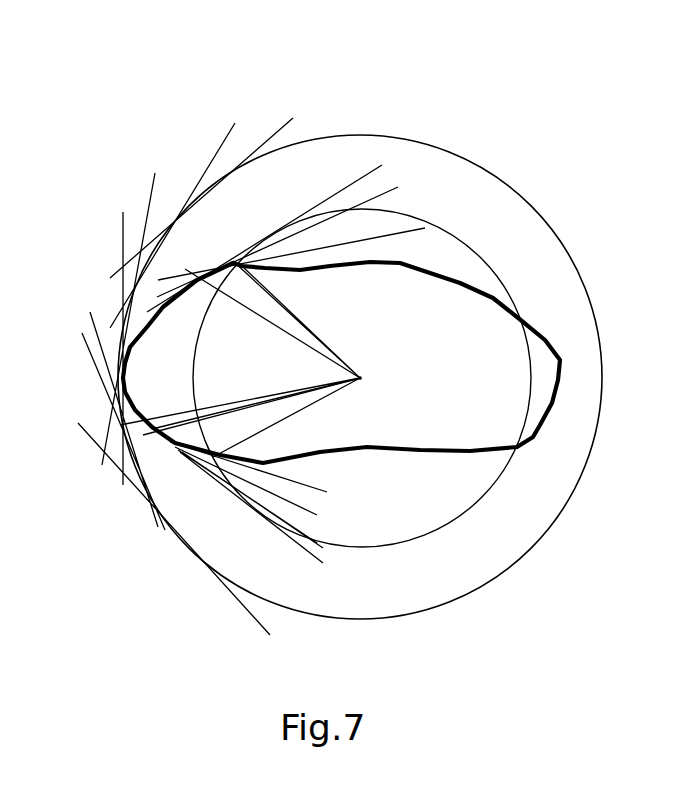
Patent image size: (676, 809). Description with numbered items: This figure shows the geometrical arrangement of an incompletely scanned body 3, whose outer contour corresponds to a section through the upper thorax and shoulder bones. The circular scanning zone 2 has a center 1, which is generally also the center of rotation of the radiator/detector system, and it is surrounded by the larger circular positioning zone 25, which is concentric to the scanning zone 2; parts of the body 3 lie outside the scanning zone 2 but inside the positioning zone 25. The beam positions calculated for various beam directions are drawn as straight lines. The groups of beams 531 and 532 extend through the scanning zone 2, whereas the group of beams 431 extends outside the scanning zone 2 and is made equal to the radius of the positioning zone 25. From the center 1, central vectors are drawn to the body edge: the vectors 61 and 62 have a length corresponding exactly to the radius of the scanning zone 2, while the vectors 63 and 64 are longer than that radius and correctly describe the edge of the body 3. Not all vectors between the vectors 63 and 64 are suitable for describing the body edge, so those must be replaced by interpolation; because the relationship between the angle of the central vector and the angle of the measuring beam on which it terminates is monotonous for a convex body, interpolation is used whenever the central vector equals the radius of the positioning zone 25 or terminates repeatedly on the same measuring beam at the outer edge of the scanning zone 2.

The center 1 is at (361, 379).
The scanning zone 2 is at (527, 396).
The body 3 is at (553, 402).
The positioning zone 25 is at (600, 400).
The vector 61 is at (300, 318).
The vector 62 is at (304, 410).
The vector 63 is at (279, 402).
The vector 64 is at (245, 310).
The group of beams 431 is at (82, 275).
The group of beams 531 is at (387, 148).
The group of beams 532 is at (340, 491).